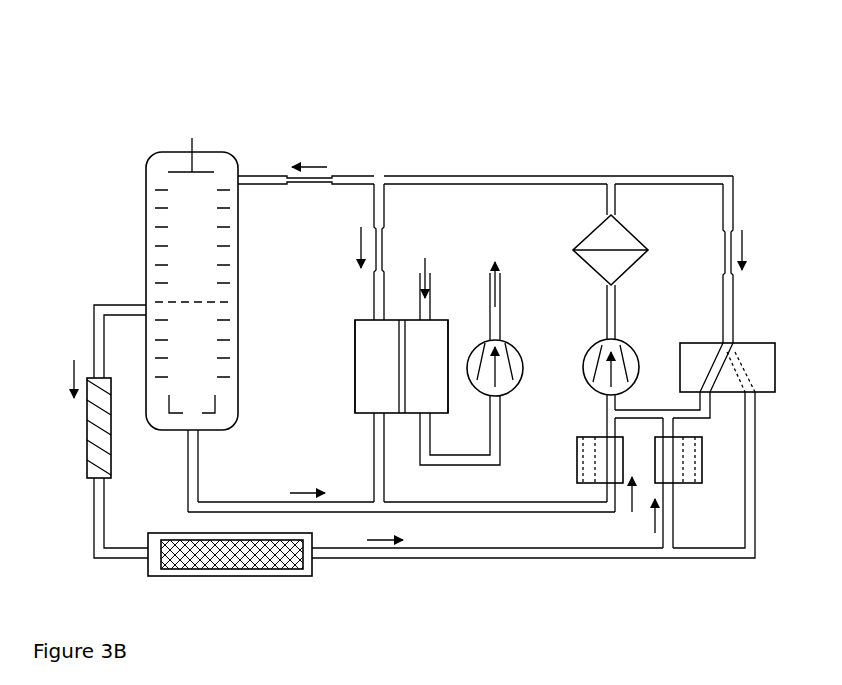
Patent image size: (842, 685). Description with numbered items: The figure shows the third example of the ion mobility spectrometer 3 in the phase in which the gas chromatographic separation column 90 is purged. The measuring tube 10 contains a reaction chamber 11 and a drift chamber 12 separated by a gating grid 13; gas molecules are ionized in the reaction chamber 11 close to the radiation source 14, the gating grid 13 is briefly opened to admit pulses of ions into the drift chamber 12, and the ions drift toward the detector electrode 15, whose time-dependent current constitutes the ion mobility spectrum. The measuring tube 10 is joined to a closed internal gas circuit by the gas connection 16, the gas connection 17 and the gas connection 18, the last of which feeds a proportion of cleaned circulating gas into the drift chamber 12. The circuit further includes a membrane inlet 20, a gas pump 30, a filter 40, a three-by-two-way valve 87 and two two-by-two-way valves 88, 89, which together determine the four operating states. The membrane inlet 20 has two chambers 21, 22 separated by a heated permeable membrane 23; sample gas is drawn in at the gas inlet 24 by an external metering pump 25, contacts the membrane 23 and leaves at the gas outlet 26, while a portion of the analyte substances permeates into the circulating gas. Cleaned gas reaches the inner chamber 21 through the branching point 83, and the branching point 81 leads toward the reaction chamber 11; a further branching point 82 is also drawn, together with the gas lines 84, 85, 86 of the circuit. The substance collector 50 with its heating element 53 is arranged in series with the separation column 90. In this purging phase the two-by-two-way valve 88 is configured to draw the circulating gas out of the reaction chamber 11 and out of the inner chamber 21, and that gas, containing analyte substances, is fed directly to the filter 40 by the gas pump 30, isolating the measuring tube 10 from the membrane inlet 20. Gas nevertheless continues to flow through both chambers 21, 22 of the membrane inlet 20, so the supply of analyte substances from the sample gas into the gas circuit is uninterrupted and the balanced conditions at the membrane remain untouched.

The ion mobility spectrometer 3 is at (455, 102).
The measuring tube 10 is at (93, 227).
The reaction chamber 11 is at (192, 348).
The drift chamber 12 is at (192, 236).
The gating grid 13 is at (223, 297).
The radiation source 14 is at (213, 413).
The detector electrode 15 is at (210, 163).
The gas connection 16 is at (190, 435).
The gas connection 17 is at (143, 305).
The gas connection 18 is at (238, 178).
The membrane inlet 20 is at (468, 253).
The chamber 21 is at (372, 366).
The chamber 22 is at (431, 366).
The membrane 23 is at (398, 377).
The gas inlet 24 is at (439, 289).
The external metering pump 25 is at (503, 340).
The gas outlet 26 is at (509, 301).
The gas pump 30 is at (583, 357).
The filter 40 is at (635, 240).
The substance collector 50 is at (188, 567).
The heating element 53 is at (263, 576).
The branching point 81 is at (380, 507).
The branching point 82 is at (612, 185).
The branching point 83 is at (377, 182).
The bottom line 84 is at (667, 553).
The connecting line 85 is at (607, 411).
The branch line 86 is at (667, 415).
The 3/2-way valve 87 is at (775, 362).
The 2/2-way valve 88 is at (577, 465).
The 2/2-way valve 89 is at (703, 463).
The gas chromatographic separation column 90 is at (87, 412).